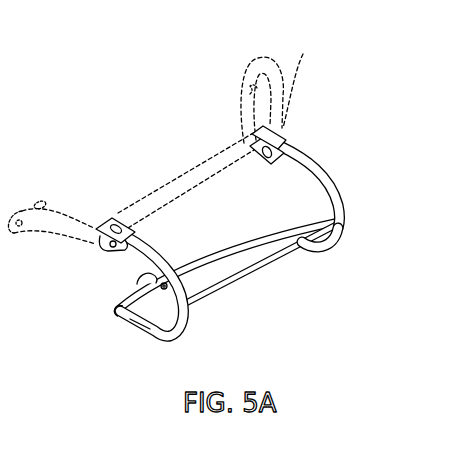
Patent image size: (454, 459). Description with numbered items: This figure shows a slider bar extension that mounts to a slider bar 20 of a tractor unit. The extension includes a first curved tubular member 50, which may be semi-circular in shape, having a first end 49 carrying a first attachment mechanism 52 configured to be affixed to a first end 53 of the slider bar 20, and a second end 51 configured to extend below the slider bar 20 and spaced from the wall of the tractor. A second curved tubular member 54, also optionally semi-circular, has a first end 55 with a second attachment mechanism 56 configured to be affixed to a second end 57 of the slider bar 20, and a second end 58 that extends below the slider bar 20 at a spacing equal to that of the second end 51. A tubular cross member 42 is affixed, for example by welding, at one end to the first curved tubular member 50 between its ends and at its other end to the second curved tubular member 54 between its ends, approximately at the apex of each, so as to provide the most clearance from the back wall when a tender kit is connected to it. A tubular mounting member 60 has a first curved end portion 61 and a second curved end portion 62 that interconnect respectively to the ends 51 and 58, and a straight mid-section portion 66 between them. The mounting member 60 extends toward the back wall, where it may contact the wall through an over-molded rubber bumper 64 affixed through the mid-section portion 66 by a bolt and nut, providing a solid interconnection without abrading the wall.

The slider bar 20 is at (306, 86).
The tubular cross member 42 is at (217, 297).
The first end 49 is at (125, 251).
The first curved tubular member 50 is at (156, 309).
The second end 51 is at (153, 339).
The first attachment mechanism 52 is at (101, 218).
The first end 53 is at (64, 210).
The second curved tubular member 54 is at (340, 194).
The first end 55 is at (282, 143).
The second attachment mechanism 56 is at (266, 134).
The second end 57 is at (243, 130).
The second end 58 is at (308, 252).
The tubular mounting member 60 is at (204, 266).
The first curved end portion 61 is at (117, 318).
The second curved end portion 62 is at (263, 251).
The over-molded rubber bumper 64 is at (137, 279).
The straight mid-section portion 66 is at (123, 292).